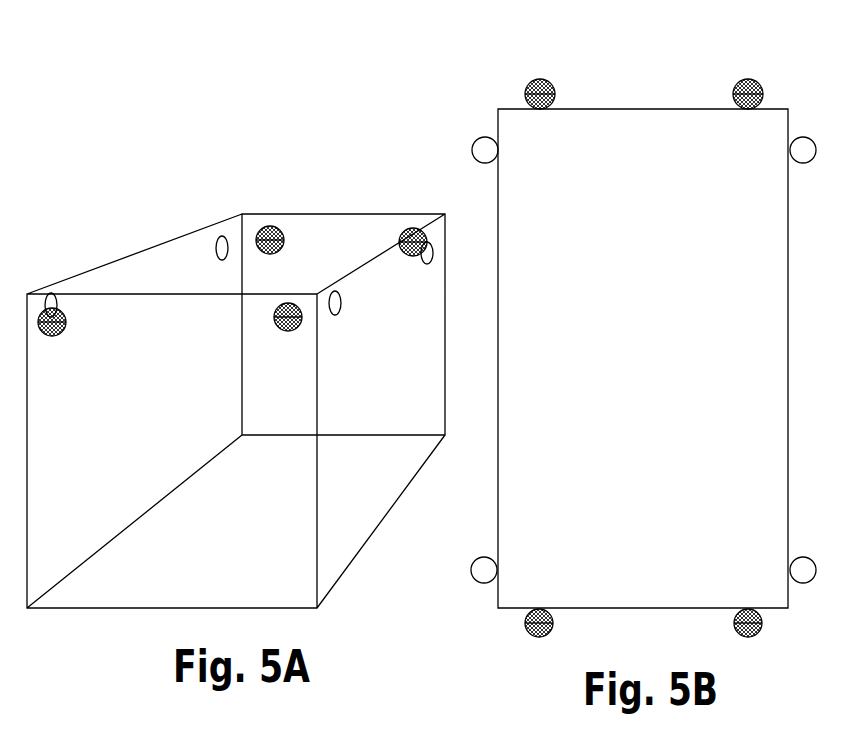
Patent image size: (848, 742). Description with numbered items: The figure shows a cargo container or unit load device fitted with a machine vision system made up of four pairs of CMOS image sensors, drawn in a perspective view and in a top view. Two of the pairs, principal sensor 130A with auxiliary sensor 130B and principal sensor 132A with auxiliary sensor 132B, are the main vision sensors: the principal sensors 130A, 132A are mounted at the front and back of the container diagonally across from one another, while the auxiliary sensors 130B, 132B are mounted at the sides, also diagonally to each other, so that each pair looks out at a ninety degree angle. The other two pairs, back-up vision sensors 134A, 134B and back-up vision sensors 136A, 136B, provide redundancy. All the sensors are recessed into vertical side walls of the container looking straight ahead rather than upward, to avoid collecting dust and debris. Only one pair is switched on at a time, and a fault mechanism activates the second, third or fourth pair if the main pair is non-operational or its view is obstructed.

In FIG. 5A, the principal sensor 130A is at (274, 318).
In FIG. 5B, the principal sensor 130A is at (734, 627).
In FIG. 5A, the auxiliary sensor 130B is at (338, 315).
In FIG. 5B, the auxiliary sensor 130B is at (805, 583).
In FIG. 5A, the principal sensor 132A is at (268, 226).
In FIG. 5B, the principal sensor 132A is at (540, 80).
In FIG. 5A, the auxiliary sensor 132B is at (220, 236).
In FIG. 5B, the auxiliary sensor 132B is at (473, 145).
In FIG. 5A, the back-up vision sensor 134A is at (413, 228).
In FIG. 5B, the back-up vision sensor 134A is at (745, 80).
In FIG. 5A, the back-up vision sensor 134B is at (431, 264).
In FIG. 5B, the back-up vision sensor 134B is at (803, 137).
In FIG. 5A, the back-up vision sensor 136A is at (48, 307).
In FIG. 5B, the back-up vision sensor 136A is at (540, 638).
In FIG. 5A, the back-up vision sensor 136B is at (55, 293).
In FIG. 5B, the back-up vision sensor 136B is at (472, 574).